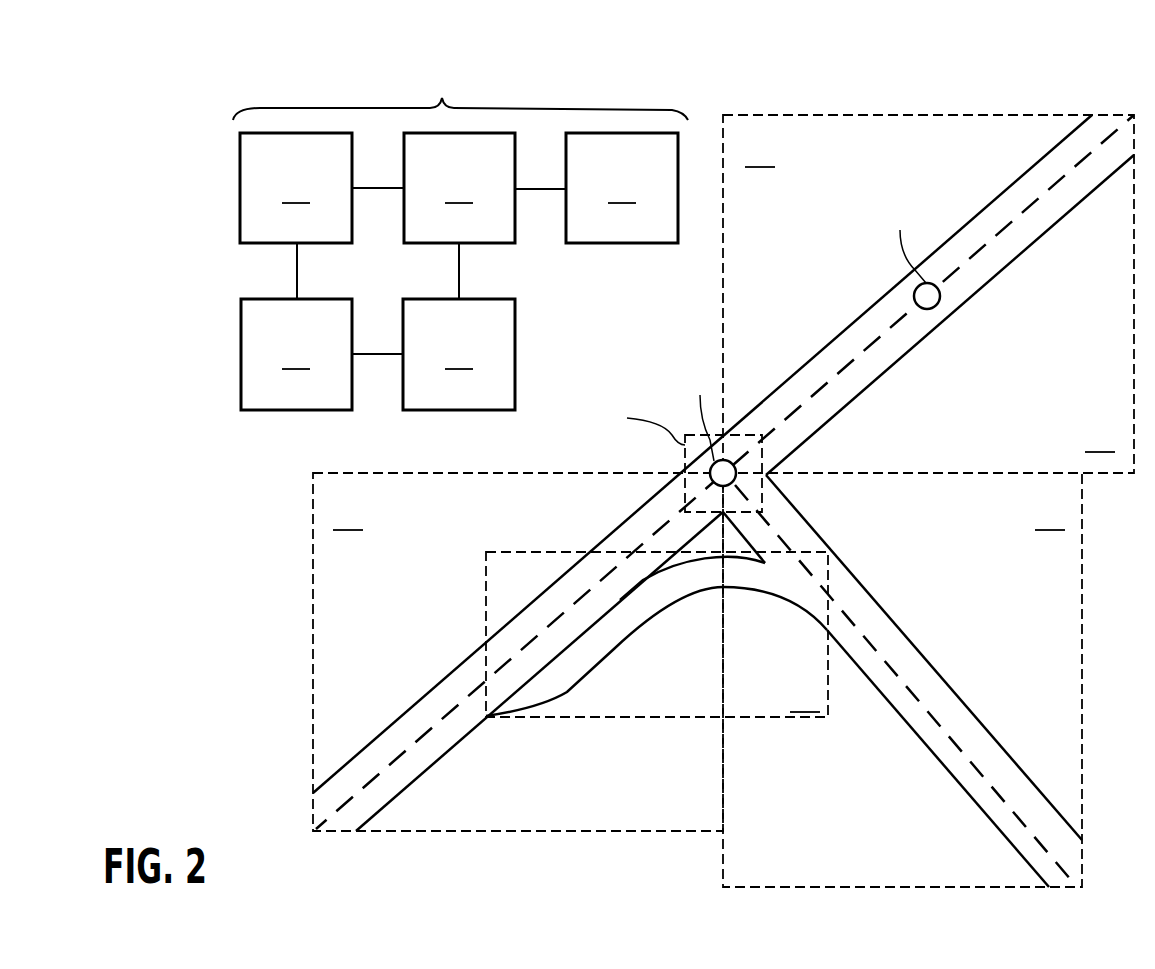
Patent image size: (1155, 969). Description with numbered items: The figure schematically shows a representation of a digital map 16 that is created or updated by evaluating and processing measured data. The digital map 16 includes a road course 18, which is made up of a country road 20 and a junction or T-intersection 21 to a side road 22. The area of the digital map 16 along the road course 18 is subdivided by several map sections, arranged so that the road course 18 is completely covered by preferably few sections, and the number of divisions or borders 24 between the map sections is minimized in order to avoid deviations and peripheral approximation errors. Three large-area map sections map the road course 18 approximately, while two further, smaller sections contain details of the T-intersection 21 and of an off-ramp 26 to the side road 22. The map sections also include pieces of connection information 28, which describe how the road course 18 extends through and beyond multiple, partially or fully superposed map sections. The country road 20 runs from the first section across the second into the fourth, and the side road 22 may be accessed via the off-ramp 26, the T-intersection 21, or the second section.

The digital map 16 is at (213, 128).
The road course 18 is at (575, 517).
The country road 20 is at (452, 687).
The T-intersection 21 is at (787, 482).
The side road 22 is at (952, 703).
The borders 24 is at (722, 340).
The off-ramp 26 is at (683, 592).
The pieces of connection information 28 is at (377, 190).